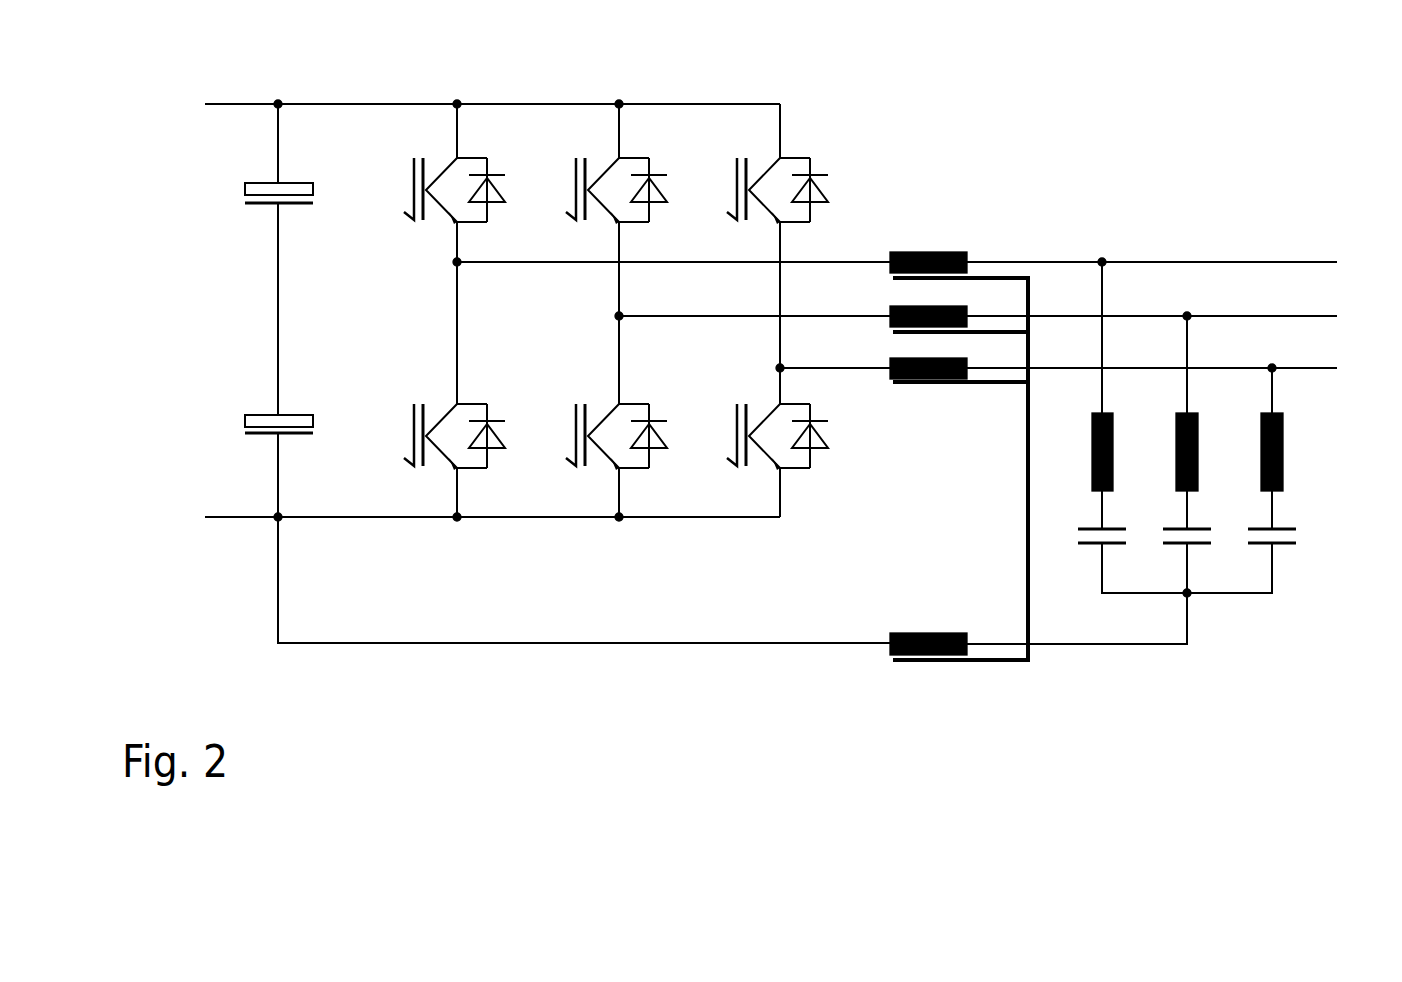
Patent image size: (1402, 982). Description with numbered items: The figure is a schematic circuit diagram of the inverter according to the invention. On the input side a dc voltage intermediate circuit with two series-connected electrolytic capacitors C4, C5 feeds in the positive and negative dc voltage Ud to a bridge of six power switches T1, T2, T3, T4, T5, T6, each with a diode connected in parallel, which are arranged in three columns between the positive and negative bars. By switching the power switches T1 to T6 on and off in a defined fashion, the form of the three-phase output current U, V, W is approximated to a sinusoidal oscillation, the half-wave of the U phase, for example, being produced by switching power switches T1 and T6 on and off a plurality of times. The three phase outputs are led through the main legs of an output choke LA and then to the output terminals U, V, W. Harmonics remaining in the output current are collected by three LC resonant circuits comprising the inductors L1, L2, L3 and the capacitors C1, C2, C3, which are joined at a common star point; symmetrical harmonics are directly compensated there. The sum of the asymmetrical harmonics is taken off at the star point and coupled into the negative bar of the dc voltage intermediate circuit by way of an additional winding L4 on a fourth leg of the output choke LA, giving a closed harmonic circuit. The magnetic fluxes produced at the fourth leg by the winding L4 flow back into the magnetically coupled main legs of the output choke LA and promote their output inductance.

The power switch T1 is at (454, 146).
The power switch T2 is at (616, 480).
The power switch T3 is at (616, 146).
The power switch T4 is at (777, 480).
The power switch T5 is at (777, 146).
The power switch T6 is at (454, 480).
The electrolytic capacitor C4 is at (257, 191).
The electrolytic capacitor C5 is at (257, 424).
The dc voltage Ud is at (456, 311).
The output choke LA is at (960, 438).
The inductor L1 is at (1113, 380).
The inductor L2 is at (1113, 407).
The inductor L3 is at (1113, 432).
The additional winding L4 is at (1038, 624).
The capacitor C1 is at (1132, 580).
The capacitor C2 is at (1192, 580).
The capacitor C3 is at (1241, 580).
The output phase U is at (1361, 265).
The output phase V is at (1360, 318).
The output phase W is at (1363, 372).